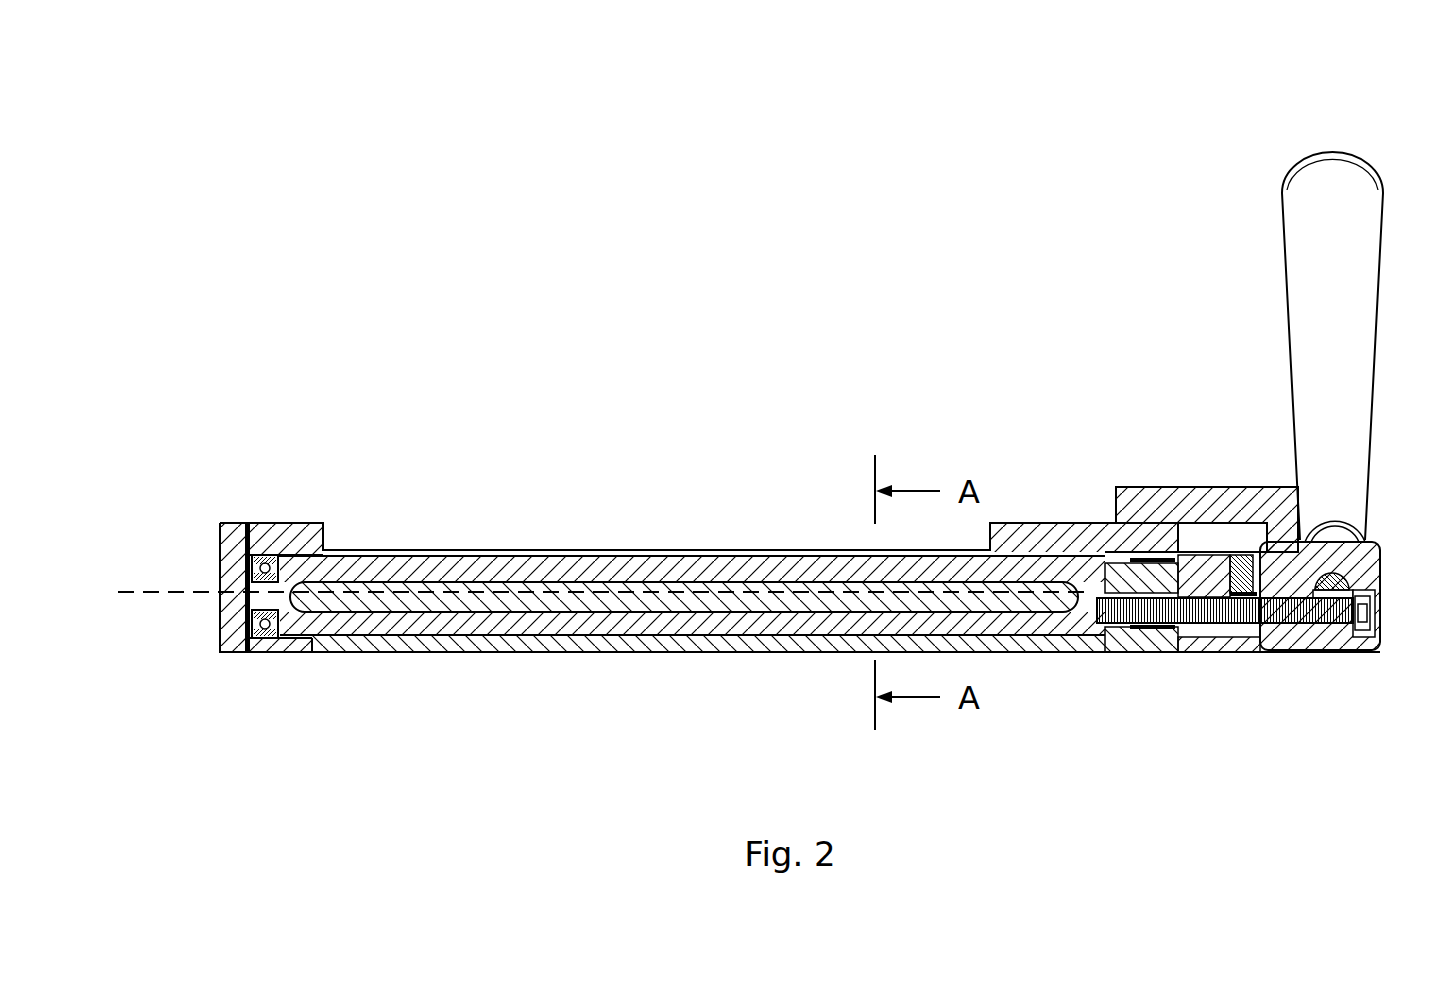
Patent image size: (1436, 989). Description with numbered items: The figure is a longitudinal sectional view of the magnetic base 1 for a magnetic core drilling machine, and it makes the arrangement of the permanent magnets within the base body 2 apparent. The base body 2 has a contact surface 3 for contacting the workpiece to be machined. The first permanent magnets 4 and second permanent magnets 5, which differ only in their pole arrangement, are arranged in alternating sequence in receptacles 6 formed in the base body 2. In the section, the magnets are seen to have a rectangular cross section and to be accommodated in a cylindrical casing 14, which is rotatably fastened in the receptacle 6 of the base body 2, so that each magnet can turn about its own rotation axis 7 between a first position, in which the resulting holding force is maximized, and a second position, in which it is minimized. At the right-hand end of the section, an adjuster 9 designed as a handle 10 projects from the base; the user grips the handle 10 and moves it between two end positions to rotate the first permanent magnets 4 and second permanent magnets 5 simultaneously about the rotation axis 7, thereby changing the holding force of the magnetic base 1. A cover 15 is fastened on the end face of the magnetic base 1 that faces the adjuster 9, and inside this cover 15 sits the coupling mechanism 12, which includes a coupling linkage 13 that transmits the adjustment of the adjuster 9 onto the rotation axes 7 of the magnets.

The magnetic base 1 is at (789, 447).
The base body 2 is at (274, 534).
The contact surface 3 is at (647, 653).
The first permanent magnets 4 is at (367, 597).
The second permanent magnets 5 is at (397, 628).
The receptacles 6 is at (563, 560).
The rotation axis 7 is at (168, 595).
The adjuster 9 is at (1241, 325).
The handle 10 is at (1307, 223).
The coupling mechanism 12 is at (1101, 388).
The coupling linkage 13 is at (1243, 570).
The cylindrical casing 14 is at (456, 565).
The cover 15 is at (1322, 630).